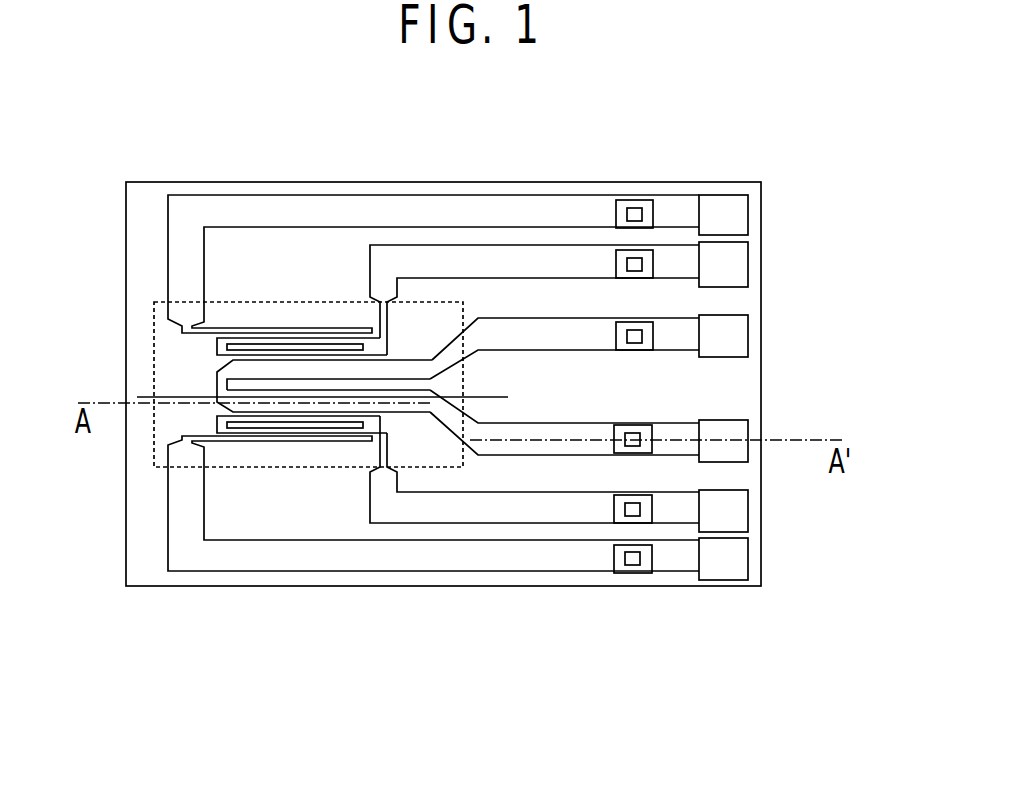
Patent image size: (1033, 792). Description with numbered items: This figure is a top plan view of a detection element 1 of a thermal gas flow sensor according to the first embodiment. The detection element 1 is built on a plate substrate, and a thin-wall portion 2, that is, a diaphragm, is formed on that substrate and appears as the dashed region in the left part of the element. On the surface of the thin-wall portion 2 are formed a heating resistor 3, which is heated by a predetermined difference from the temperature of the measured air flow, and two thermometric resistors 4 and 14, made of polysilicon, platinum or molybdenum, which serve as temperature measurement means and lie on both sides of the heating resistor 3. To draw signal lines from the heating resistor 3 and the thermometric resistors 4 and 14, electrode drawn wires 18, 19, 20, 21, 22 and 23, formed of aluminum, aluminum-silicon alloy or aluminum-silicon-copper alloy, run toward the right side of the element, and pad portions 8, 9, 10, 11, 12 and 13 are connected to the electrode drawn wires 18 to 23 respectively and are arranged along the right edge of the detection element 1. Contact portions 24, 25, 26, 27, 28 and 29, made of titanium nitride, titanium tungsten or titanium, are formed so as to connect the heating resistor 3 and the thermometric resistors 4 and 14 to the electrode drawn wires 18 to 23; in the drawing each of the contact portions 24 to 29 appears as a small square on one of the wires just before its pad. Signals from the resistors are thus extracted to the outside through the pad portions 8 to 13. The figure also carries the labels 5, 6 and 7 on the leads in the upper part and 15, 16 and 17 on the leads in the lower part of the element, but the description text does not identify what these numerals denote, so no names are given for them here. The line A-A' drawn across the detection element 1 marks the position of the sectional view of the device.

The detection element 1 is at (140, 212).
The thin-wall portion 2 is at (253, 300).
The heating resistor 3 is at (293, 370).
The thermometric resistor 4 is at (337, 343).
The lead wire 5 is at (477, 212).
The lead wire 6 is at (524, 258).
The lead wire 7 is at (590, 330).
The pad portion 8 is at (751, 215).
The pad portion 9 is at (751, 268).
The pad portion 10 is at (751, 335).
The pad portion 11 is at (751, 453).
The pad portion 12 is at (751, 503).
The pad portion 13 is at (751, 570).
The thermometric resistor 14 is at (288, 425).
The lead wire 15 is at (405, 557).
The lead wire 16 is at (498, 508).
The lead wire 17 is at (558, 430).
The electrode drawn wire 18 is at (683, 213).
The electrode drawn wire 19 is at (677, 263).
The electrode drawn wire 20 is at (675, 342).
The electrode drawn wire 21 is at (673, 430).
The electrode drawn wire 22 is at (683, 508).
The electrode drawn wire 23 is at (675, 560).
The contact portion 24 is at (631, 573).
The contact portion 25 is at (633, 497).
The contact portion 26 is at (630, 427).
The contact portion 27 is at (637, 321).
The contact portion 28 is at (632, 243).
The contact portion 29 is at (633, 200).